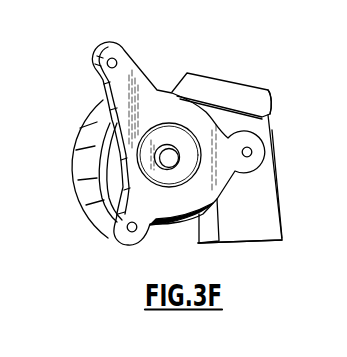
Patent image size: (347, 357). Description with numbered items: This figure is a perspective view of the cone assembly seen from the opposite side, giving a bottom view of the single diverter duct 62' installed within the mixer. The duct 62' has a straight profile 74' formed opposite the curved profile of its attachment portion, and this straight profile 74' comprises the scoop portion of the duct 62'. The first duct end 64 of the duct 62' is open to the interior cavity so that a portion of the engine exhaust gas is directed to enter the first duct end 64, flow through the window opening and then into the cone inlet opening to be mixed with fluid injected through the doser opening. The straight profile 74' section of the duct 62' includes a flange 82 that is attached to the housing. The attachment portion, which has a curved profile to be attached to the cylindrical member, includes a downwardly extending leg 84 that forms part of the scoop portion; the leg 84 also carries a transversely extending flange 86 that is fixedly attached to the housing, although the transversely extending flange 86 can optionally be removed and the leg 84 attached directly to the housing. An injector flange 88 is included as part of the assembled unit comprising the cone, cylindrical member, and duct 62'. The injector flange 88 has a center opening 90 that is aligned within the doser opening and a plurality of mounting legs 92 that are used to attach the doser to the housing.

The diverter duct 62' is at (193, 171).
The first duct end 64 is at (262, 244).
The straight profile 74' is at (298, 184).
The flange 82 is at (208, 87).
The downwardly extending leg 84 is at (196, 241).
The transversely extending flange 86 is at (262, 98).
The injector flange 88 is at (140, 88).
The center opening 90 is at (163, 160).
The mounting legs 92 is at (93, 63).